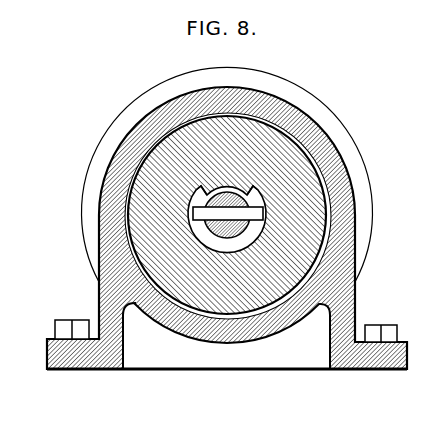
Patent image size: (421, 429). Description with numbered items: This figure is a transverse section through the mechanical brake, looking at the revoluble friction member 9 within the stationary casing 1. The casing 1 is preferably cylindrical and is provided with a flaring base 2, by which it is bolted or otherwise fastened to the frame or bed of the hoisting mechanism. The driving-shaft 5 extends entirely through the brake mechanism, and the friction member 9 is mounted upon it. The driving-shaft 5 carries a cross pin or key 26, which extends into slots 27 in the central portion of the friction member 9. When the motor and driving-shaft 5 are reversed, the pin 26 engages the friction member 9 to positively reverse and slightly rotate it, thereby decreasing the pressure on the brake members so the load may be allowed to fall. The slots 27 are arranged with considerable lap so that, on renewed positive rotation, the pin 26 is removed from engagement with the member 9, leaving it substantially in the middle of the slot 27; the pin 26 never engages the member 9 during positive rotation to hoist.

The stationary casing 1 is at (273, 90).
The flaring base 2 is at (372, 357).
The driving-shaft 5 is at (220, 187).
The friction member 9 is at (276, 141).
The cross pin or key 26 is at (264, 212).
The slots 27 is at (192, 200).